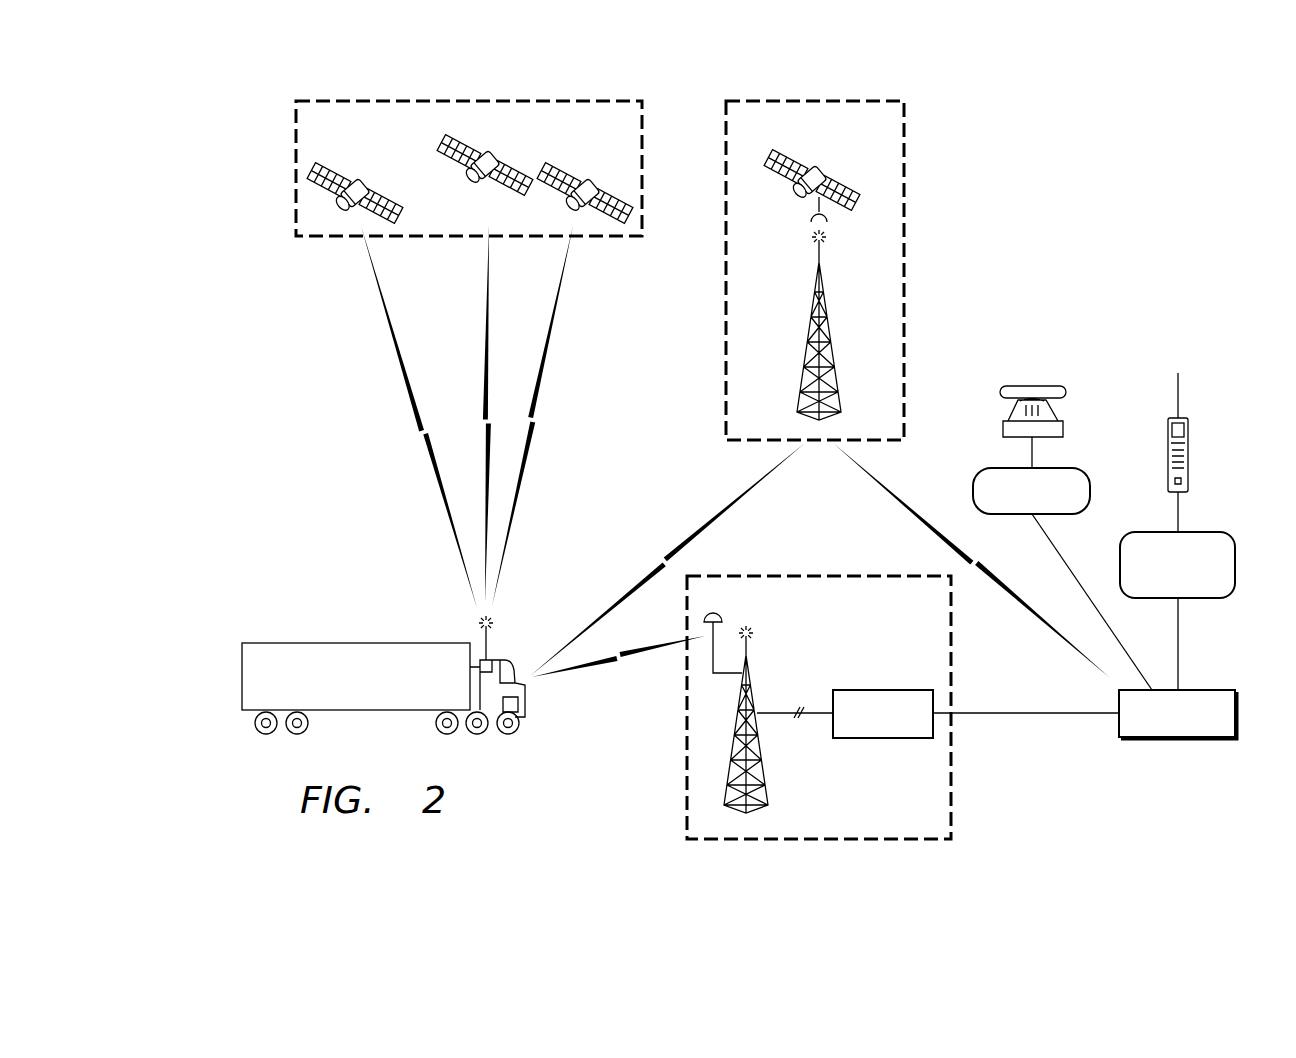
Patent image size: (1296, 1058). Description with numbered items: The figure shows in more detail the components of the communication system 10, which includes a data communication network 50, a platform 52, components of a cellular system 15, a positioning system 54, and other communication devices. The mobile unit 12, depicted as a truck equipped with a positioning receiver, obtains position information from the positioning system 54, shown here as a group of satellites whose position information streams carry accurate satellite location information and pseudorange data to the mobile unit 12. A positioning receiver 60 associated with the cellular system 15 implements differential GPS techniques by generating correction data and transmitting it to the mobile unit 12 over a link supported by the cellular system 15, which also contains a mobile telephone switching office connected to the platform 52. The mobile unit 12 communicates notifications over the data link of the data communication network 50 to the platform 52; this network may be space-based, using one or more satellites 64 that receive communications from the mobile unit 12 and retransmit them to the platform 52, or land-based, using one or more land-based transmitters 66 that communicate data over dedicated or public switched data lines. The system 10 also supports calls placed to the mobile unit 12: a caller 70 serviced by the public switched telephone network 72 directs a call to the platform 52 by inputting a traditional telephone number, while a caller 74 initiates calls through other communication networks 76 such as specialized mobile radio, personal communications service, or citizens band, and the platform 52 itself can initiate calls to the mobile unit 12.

The system 10 is at (1135, 250).
The mobile unit 12 is at (479, 665).
The cellular system 15 is at (897, 860).
The data communication network 50 is at (920, 155).
The platform 52 is at (1207, 690).
The positioning system 54 is at (288, 150).
The positioning receiver 60 is at (725, 615).
The satellites 64 is at (830, 163).
The land-based transmitter 66 is at (800, 348).
The caller 70 is at (1035, 385).
The public switched telephone network (PSTN) 72 is at (1090, 468).
The caller 74 is at (1190, 430).
The other communication networks 76 is at (1232, 533).